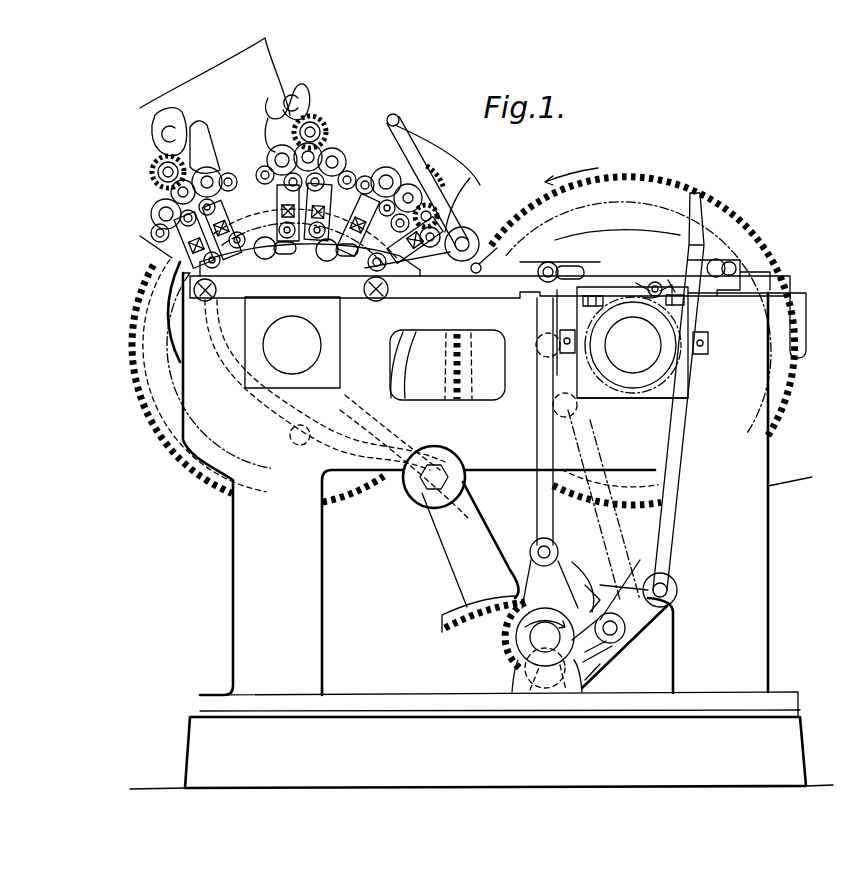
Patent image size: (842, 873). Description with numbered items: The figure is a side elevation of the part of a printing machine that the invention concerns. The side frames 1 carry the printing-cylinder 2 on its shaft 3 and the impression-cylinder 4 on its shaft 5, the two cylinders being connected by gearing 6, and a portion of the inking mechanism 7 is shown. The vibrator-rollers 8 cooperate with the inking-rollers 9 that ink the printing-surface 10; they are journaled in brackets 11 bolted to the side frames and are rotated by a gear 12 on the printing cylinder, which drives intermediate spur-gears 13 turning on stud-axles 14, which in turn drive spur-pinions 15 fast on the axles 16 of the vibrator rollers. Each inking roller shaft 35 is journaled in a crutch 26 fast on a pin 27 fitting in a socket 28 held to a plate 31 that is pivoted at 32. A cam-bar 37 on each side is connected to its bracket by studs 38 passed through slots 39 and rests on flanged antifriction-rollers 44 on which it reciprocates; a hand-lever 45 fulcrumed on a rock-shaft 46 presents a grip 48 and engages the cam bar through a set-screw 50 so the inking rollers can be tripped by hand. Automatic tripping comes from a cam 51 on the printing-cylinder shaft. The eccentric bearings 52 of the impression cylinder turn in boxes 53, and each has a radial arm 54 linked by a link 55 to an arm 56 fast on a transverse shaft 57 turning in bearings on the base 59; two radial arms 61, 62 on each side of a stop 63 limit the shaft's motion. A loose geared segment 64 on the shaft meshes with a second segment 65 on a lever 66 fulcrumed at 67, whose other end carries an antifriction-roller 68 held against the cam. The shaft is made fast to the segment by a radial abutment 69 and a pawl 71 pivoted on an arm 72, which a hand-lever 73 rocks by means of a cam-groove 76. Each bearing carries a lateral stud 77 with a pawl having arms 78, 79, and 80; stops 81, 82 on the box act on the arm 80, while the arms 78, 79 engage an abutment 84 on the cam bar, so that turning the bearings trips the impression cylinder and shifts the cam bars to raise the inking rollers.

The side frame 1 is at (497, 495).
The printing-cylinder 2 is at (150, 285).
The shaft of printing-cylinder 3 is at (292, 342).
The impression-cylinder 4 is at (617, 220).
The shaft of impression-cylinder 5 is at (632, 342).
The gearing 6 is at (128, 392).
The inking mechanism 7 is at (238, 160).
The vibrator-roller 8 is at (322, 118).
The inking-roller 9 is at (151, 214).
The printing-surface 10 is at (234, 481).
The bracket 11 is at (335, 124).
The gear 12 is at (160, 312).
The intermediate spur-gear 13 is at (449, 178).
The stud-axle 14 is at (205, 160).
The spur-pinion 15 is at (158, 165).
The axle of vibrator-roller 16 is at (316, 130).
The crutch 26 is at (259, 168).
The pin 27 is at (152, 235).
The socket 28 is at (463, 237).
The plate 31 is at (160, 240).
The pivot 32 is at (231, 180).
The shaft of inking-roller 35 is at (337, 159).
The cam-bar 37 is at (450, 281).
The stud 38 is at (527, 262).
The slot 39 is at (324, 253).
The flanged antifriction-roller 44 is at (194, 290).
The hand-lever 45 is at (397, 170).
The rock-shaft 46 is at (486, 258).
The grip 48 is at (398, 117).
The set-screw 50 is at (481, 266).
The cam 51 is at (175, 338).
The bearing 52 is at (613, 375).
The box 53 is at (652, 398).
The radial arm 54 is at (560, 356).
The link 55 is at (540, 510).
The arm 56 is at (530, 552).
The transverse shaft 57 is at (546, 640).
The base 59 is at (481, 753).
The radial arm 61 is at (618, 637).
The radial arm 62 is at (520, 688).
The stop 63 is at (560, 690).
The geared segment 64 is at (497, 640).
The second segment 65 is at (444, 627).
The lever 66 is at (466, 570).
The fulcrum 67 is at (446, 480).
The antifriction-roller 68 is at (298, 428).
The radial abutment 69 is at (576, 580).
The pawl 71 is at (598, 592).
The arm 72 is at (616, 578).
The hand-lever 73 is at (688, 422).
The cam-groove 76 is at (598, 676).
The lateral stud 77 is at (648, 282).
The pawl-arm 78 is at (648, 286).
The pawl-arm 79 is at (673, 280).
The pawl-arm 80 is at (709, 345).
The stop 81 is at (582, 300).
The stop 82 is at (686, 300).
The abutment 84 is at (550, 263).